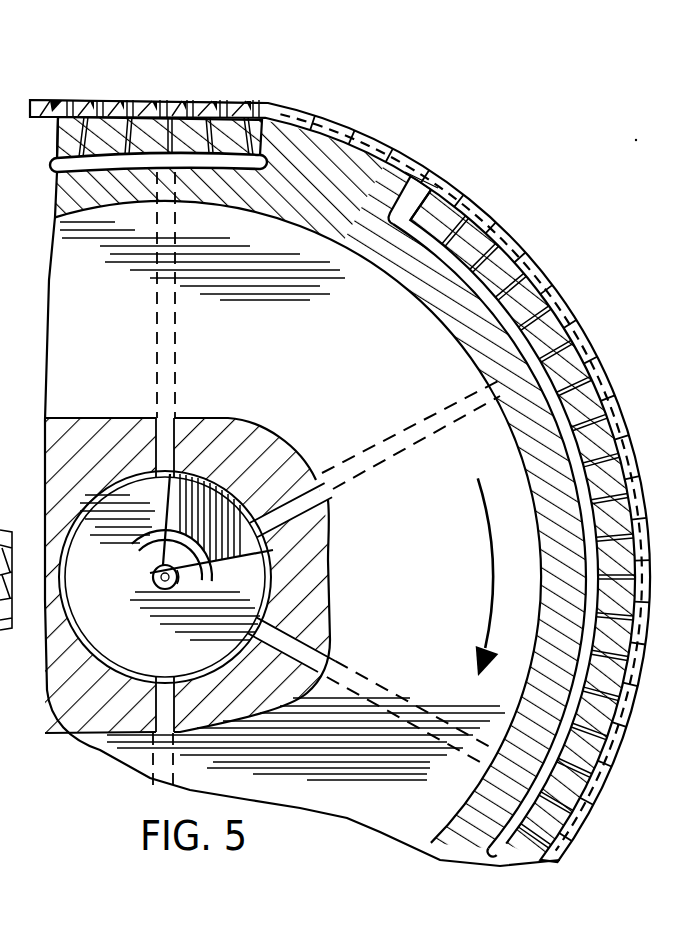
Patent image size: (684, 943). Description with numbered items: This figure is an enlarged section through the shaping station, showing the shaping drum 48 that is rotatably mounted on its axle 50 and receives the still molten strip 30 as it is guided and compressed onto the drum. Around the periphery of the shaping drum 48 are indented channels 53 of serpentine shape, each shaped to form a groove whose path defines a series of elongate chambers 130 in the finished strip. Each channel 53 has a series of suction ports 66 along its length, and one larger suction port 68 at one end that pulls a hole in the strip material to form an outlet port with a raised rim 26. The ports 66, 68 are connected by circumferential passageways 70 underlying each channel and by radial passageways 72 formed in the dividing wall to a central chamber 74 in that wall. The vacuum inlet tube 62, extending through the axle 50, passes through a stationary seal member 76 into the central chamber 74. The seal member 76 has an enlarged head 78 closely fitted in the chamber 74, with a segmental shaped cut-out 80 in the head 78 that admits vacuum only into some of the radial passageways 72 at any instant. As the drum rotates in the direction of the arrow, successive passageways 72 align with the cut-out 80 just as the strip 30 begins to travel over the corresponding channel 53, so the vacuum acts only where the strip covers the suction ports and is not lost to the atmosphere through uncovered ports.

The raised rim 26 is at (422, 200).
The strip 30 is at (72, 100).
The shaping drum 48 is at (350, 175).
The axle 50 is at (238, 560).
The indented channel 53 is at (60, 128).
The inlet tube 62 is at (152, 585).
The suction ports 66 is at (60, 163).
The larger suction port 68 is at (405, 200).
The circumferential passageways 70 is at (228, 172).
The radial passageways 72 is at (180, 424).
The central chamber 74 is at (300, 522).
The seal member 76 is at (150, 553).
The enlarged head 78 is at (300, 604).
The segmental shaped cut-out 80 is at (207, 477).
The elongate chambers 130 is at (218, 100).